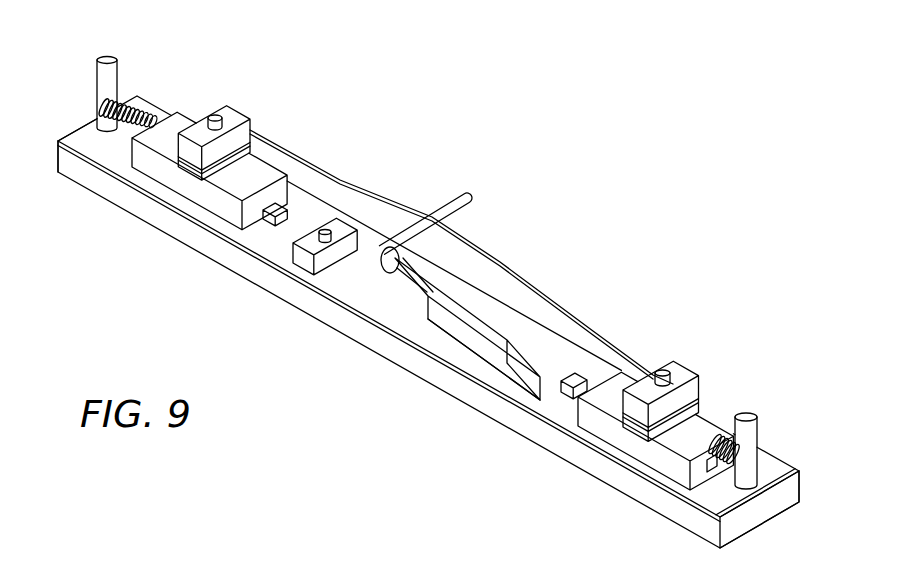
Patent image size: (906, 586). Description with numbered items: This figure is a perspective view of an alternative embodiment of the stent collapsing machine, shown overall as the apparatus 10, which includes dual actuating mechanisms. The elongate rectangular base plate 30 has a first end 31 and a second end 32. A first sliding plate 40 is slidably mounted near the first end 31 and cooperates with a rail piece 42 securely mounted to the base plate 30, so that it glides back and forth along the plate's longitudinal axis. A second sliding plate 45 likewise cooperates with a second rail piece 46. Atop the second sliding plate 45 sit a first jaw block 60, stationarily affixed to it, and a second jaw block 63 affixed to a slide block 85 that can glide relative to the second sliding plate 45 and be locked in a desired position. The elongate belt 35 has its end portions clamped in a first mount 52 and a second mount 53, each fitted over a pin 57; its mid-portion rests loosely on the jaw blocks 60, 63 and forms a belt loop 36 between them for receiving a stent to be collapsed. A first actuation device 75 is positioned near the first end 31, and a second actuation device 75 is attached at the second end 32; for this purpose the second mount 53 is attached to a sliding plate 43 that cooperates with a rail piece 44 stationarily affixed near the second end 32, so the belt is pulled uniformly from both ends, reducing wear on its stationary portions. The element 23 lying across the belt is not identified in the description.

The fixture apparatus 10 is at (358, 312).
The rod 23 is at (455, 210).
The elongate rectangular shape base plate 30 is at (177, 227).
The first end 31 is at (80, 128).
The second end 32 is at (765, 508).
The elongate belt 35 is at (597, 340).
The belt loop 36 is at (437, 275).
The first sliding plate 40 is at (187, 183).
The rail piece 42 is at (262, 218).
The sliding plate 43 is at (622, 438).
The rail piece 44 is at (720, 463).
The second sliding plate 45 is at (437, 333).
The second rail piece 46 is at (567, 387).
The first mount assembly 52 is at (250, 128).
The second mount assembly 53 is at (680, 370).
The pins 57 is at (117, 78).
The first jaw block 60 is at (318, 262).
The second jaw block 63 is at (420, 300).
The actuation device 75 is at (143, 104).
The slide block 85 is at (502, 353).